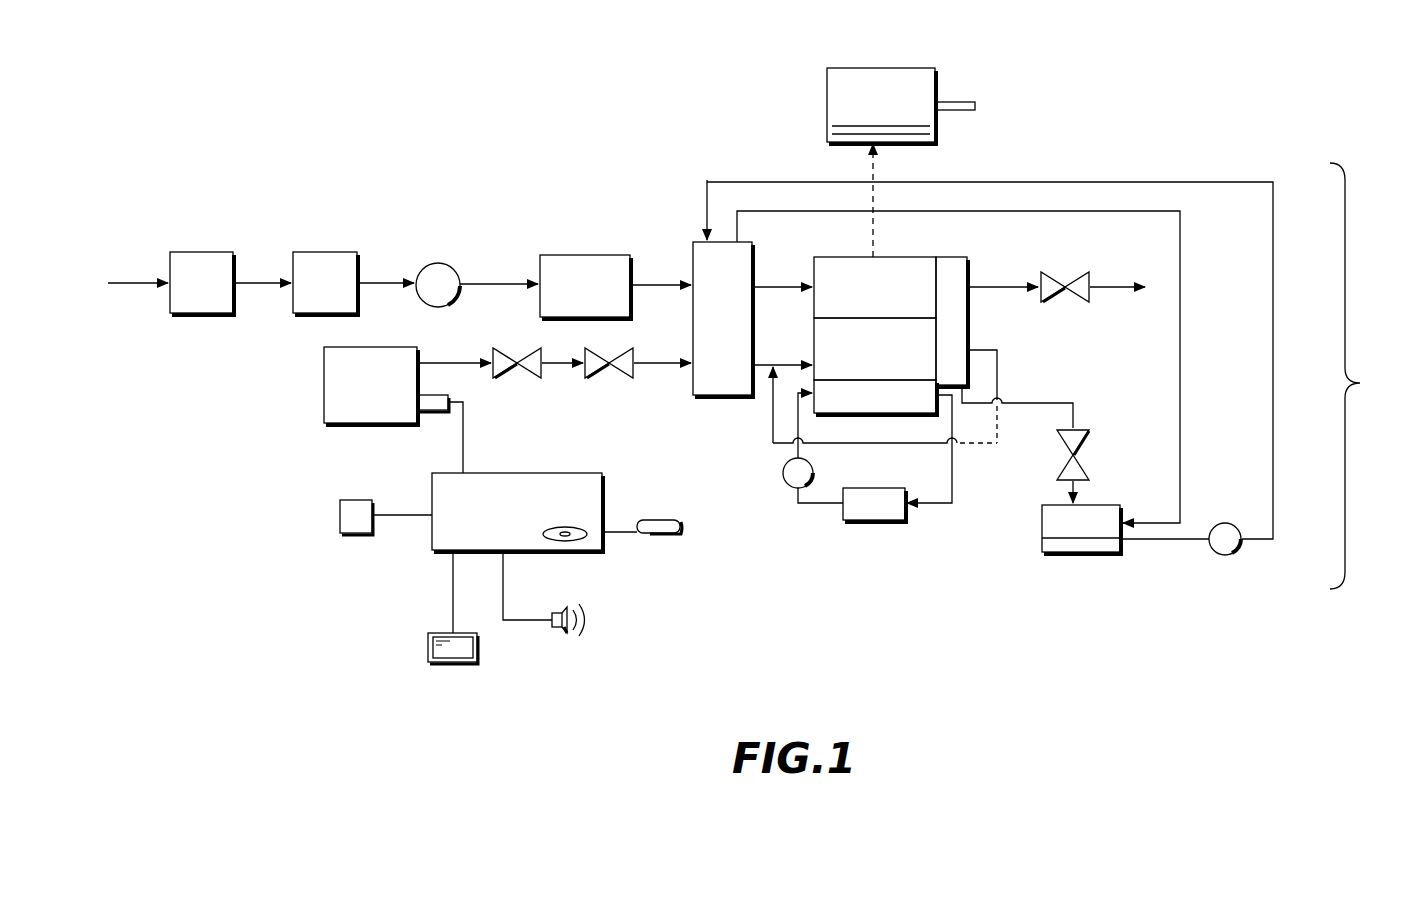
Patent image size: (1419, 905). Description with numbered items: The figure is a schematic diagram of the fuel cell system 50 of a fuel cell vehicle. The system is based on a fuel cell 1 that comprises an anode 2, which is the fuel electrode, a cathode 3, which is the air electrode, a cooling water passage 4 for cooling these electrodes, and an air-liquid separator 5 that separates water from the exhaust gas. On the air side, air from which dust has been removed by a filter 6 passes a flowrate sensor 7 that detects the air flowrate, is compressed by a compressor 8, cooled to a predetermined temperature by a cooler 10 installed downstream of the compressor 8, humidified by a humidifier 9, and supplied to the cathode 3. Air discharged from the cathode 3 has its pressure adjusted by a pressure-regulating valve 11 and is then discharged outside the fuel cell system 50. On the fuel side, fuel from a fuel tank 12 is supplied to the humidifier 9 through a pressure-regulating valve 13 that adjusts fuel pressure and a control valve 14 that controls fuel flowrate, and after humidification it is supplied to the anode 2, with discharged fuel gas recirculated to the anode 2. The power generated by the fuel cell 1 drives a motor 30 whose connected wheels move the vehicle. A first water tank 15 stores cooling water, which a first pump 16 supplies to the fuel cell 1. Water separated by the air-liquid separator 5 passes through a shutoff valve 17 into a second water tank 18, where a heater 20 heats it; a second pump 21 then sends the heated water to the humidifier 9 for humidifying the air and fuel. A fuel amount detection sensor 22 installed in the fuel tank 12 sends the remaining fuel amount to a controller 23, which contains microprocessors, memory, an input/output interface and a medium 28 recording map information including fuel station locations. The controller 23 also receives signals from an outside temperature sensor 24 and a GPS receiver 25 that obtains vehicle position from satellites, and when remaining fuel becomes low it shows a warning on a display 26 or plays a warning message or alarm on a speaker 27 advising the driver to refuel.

The fuel cell 1 is at (893, 329).
The anode 2 is at (814, 340).
The cathode 3 is at (832, 257).
The cooling water passage 4 is at (870, 413).
The air-liquid separator 5 is at (968, 318).
The filter 6 is at (192, 252).
The flowrate sensor 7 is at (310, 252).
The compressor 8 is at (455, 268).
The humidifier 9 is at (730, 397).
The cooler 10 is at (567, 255).
The pressure-regulating valve 11 is at (1062, 283).
The fuel tank 12 is at (324, 388).
The pressure-regulating valve 13 is at (503, 378).
The control valve 14 is at (595, 378).
The first water tank 15 is at (860, 522).
The first pump 16 is at (783, 470).
The shutoff valve 17 is at (1057, 440).
The second water tank 18 is at (1080, 554).
The heater 20 is at (1050, 540).
The second pump 21 is at (1222, 555).
The fuel amount detection sensor 22 is at (434, 412).
The controller 23 is at (440, 553).
The outside temperature sensor 24 is at (330, 517).
The GPS receiver 25 is at (660, 520).
The display 26 is at (428, 653).
The speaker 27 is at (567, 633).
The medium 28 is at (585, 548).
The motor 30 is at (893, 72).
The fuel cell system 50 is at (1370, 376).